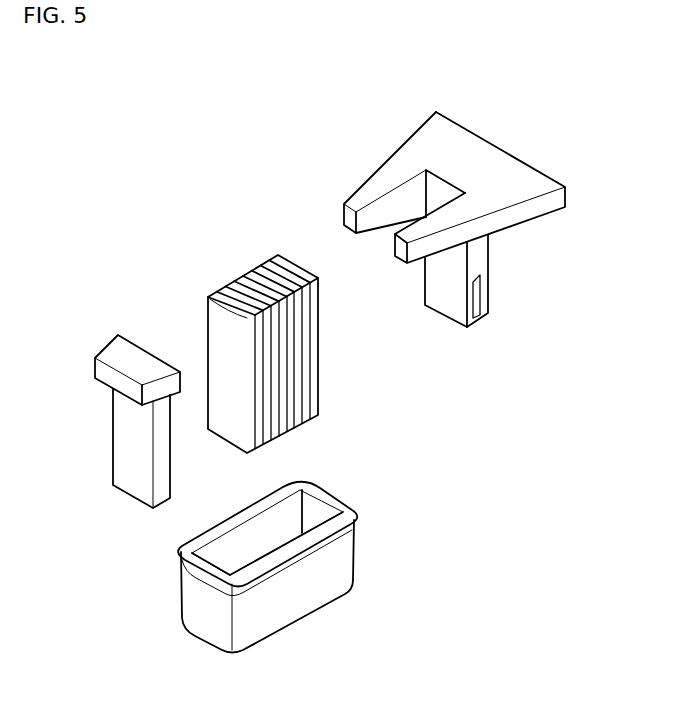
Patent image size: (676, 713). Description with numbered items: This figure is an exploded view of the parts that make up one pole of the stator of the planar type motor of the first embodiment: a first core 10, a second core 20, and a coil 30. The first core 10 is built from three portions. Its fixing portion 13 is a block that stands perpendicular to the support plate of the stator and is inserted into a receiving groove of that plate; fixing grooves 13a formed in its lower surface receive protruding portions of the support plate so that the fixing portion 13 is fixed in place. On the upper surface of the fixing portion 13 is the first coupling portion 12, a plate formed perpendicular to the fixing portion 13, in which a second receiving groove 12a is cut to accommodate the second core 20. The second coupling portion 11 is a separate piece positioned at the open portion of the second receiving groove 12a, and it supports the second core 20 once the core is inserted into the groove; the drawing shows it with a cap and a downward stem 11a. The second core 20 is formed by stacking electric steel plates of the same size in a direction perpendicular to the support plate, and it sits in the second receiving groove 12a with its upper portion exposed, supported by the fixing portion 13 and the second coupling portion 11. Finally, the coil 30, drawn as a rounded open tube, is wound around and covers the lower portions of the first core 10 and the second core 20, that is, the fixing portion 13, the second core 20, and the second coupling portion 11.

The first core 10 is at (325, 76).
The second coupling portion 11 is at (99, 350).
The stem of first member 11a is at (113, 442).
The first coupling portion 12 is at (390, 158).
The second receiving groove 12a is at (440, 203).
The fixing portion 13 is at (425, 280).
The fixing groove 13a is at (475, 293).
The second core 20 is at (317, 375).
The coil 30 is at (288, 610).